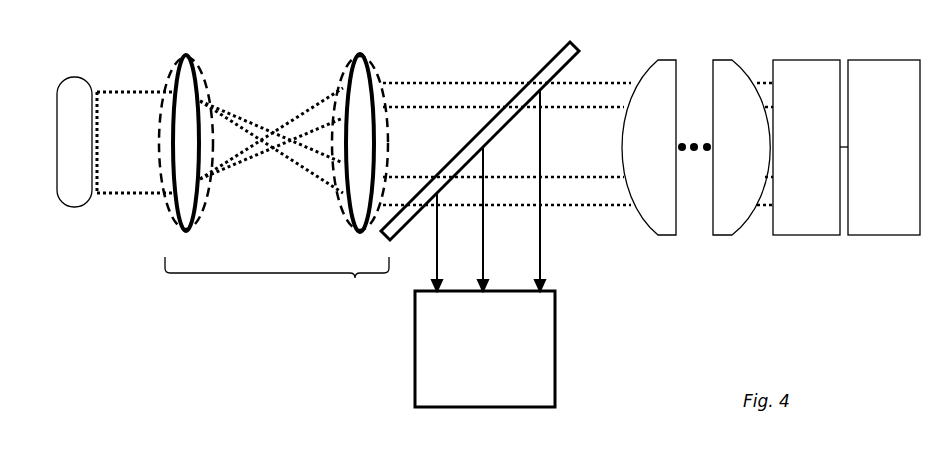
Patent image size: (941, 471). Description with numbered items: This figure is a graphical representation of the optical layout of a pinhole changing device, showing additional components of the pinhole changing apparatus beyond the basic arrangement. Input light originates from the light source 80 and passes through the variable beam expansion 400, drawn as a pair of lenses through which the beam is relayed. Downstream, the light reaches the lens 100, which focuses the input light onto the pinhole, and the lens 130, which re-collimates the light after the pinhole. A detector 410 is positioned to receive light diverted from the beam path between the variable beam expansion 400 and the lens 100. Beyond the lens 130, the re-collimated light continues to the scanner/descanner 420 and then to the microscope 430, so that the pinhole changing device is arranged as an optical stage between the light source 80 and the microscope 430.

The light source 80 is at (75, 78).
The variable beam expansion 400 is at (353, 281).
The detector 410 is at (562, 349).
The lens 100 is at (666, 60).
The lens 130 is at (743, 60).
The scanner/descanner 420 is at (808, 58).
The microscope 430 is at (885, 58).